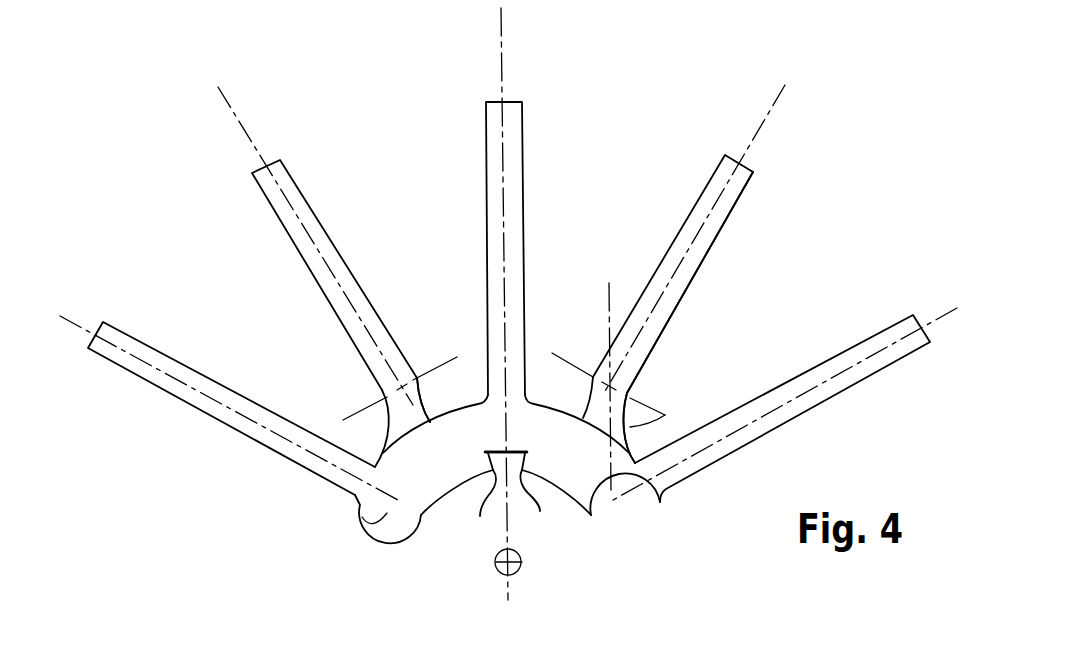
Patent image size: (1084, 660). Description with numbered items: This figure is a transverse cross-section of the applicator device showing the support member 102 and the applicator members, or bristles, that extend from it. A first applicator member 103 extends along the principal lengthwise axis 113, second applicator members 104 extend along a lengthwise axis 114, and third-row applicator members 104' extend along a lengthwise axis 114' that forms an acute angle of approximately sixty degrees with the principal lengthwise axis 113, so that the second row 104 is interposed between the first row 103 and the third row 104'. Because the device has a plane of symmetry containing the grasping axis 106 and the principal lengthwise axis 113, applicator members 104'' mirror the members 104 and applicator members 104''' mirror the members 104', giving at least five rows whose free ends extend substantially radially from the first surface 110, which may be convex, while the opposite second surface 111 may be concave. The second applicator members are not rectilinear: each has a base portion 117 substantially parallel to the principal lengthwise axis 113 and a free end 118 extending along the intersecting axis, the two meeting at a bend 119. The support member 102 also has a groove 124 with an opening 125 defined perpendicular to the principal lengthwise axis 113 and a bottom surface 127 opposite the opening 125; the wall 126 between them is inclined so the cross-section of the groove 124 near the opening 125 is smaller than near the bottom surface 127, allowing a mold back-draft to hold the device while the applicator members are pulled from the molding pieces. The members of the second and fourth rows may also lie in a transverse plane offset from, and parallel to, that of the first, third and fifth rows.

The support member 102 is at (360, 527).
The first applicator member 103 is at (512, 135).
The second applicator member 104 is at (724, 304).
The third-row applicator member 104' is at (760, 388).
The fourth-row applicator member 104'' is at (324, 277).
The fifth-row applicator member 104''' is at (229, 379).
The grasping axis 106 is at (521, 562).
The first surface 110 is at (460, 405).
The second surface 111 is at (451, 493).
The principal lengthwise axis 113 is at (500, 28).
The lengthwise axis 114 is at (694, 239).
The lengthwise axis 114' is at (787, 370).
The base portion 117 is at (665, 415).
The free end 118 is at (730, 198).
The bend 119 is at (630, 392).
The groove 124 is at (541, 500).
The opening 125 is at (477, 507).
The wall 126 is at (489, 462).
The bottom surface 127 is at (503, 450).